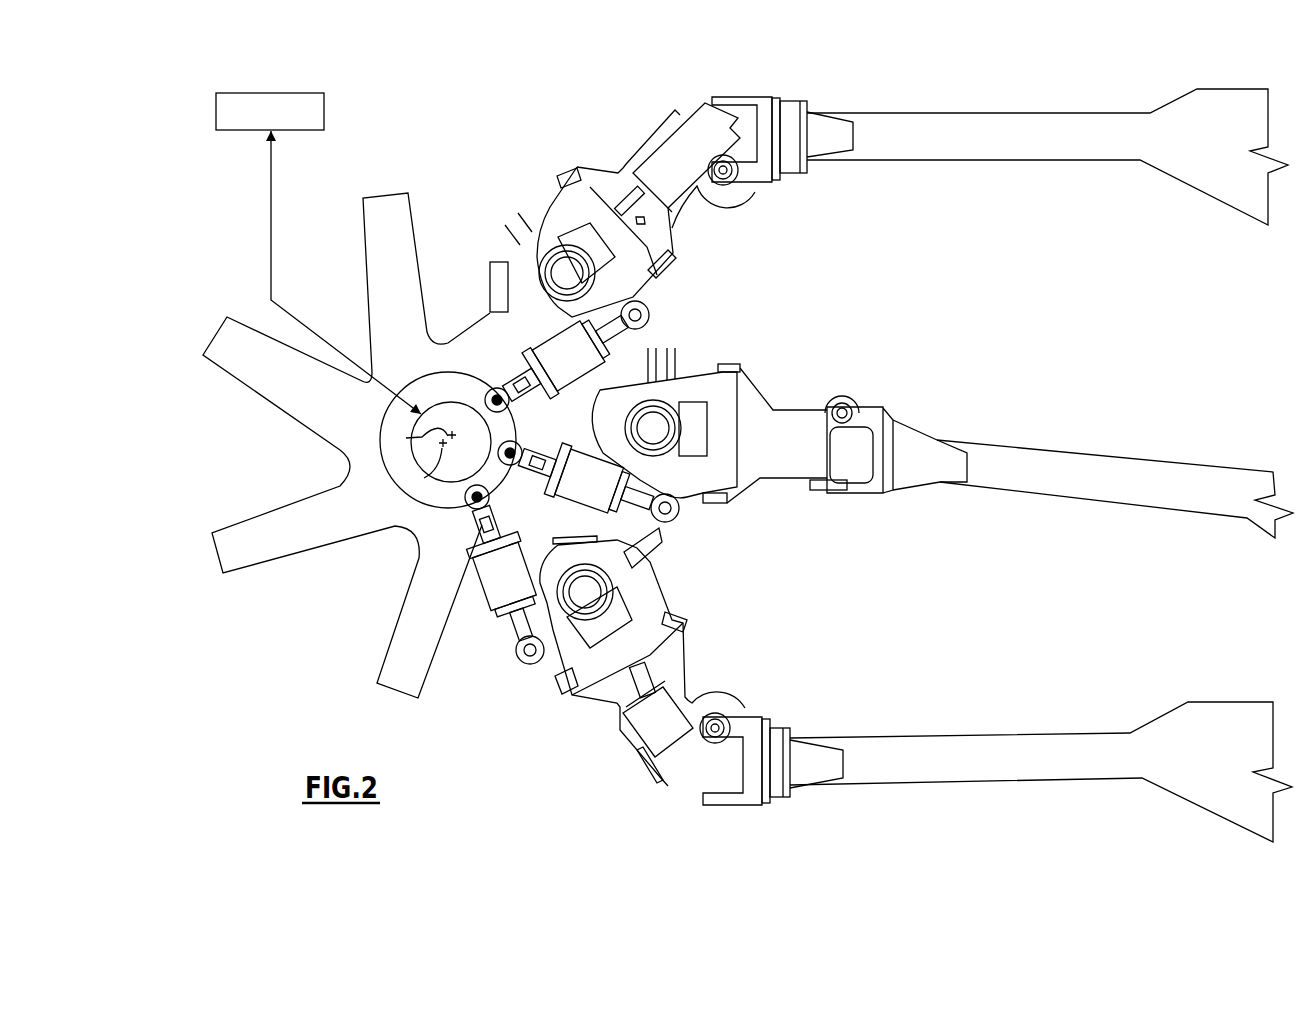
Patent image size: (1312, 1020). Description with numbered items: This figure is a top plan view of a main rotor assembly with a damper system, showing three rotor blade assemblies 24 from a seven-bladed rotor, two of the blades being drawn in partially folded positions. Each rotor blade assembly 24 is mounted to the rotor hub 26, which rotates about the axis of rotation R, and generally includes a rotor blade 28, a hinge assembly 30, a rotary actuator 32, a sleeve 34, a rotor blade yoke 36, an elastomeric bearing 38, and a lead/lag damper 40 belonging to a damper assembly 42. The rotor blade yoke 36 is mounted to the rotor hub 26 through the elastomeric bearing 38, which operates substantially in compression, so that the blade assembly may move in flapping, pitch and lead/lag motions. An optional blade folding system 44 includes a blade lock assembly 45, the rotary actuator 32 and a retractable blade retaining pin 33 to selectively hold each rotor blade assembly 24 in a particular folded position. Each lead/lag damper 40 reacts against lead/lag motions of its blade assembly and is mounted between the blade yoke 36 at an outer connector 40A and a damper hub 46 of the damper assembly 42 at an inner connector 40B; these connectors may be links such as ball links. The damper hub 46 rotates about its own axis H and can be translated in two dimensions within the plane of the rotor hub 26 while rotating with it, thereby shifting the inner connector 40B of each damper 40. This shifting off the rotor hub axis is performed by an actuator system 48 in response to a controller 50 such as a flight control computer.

The rotor blade assembly 24 is at (941, 170).
The rotor hub 26 is at (449, 255).
The rotor blade 28 is at (1038, 464).
The hinge assembly 30 is at (856, 392).
The rotary actuator 32 is at (733, 703).
The retractable blade retaining pin 33 is at (650, 544).
The sleeve 34 is at (784, 473).
The rotor blade yoke 36 is at (689, 377).
The elastomeric bearing 38 is at (680, 428).
The lead/lag damper 40 is at (557, 472).
The outer connector 40A is at (677, 513).
The inner connector 40B is at (525, 419).
The damper assembly 42 is at (435, 508).
The blade folding system 44 is at (696, 101).
The blade lock assembly 45 is at (642, 772).
The damper hub 46 is at (393, 457).
The actuator system 48 is at (447, 409).
The controller 50 is at (325, 112).